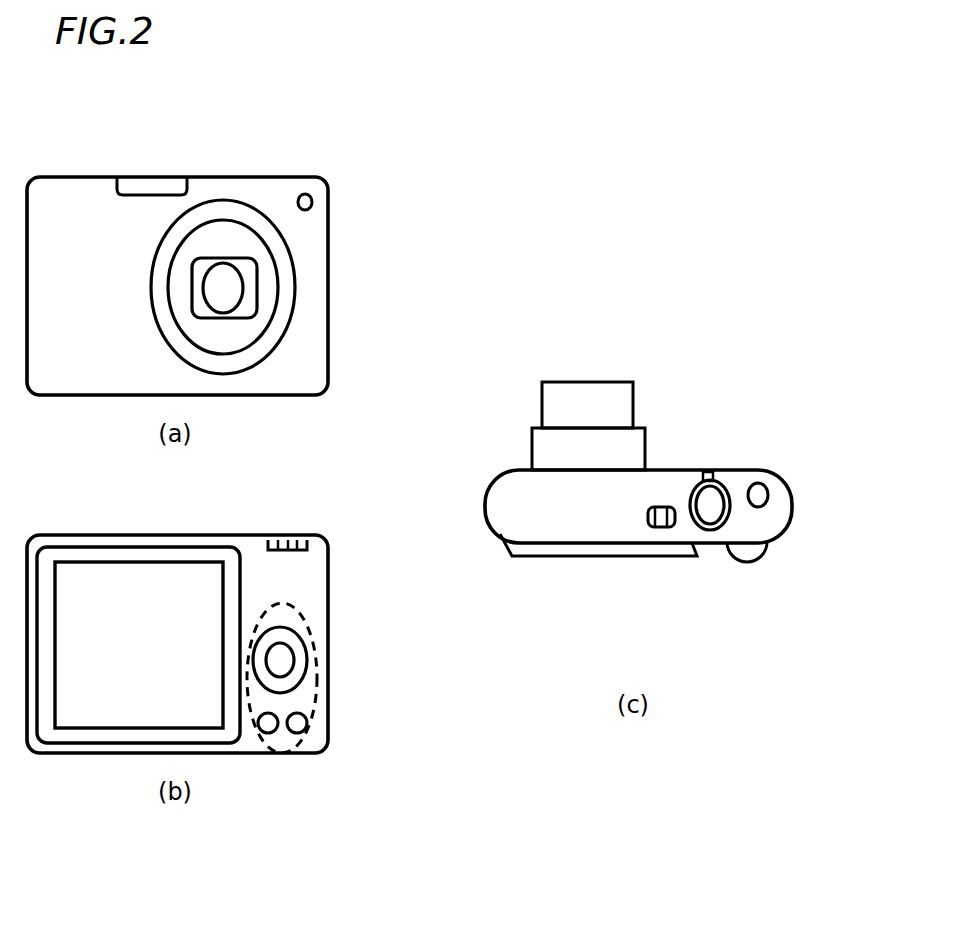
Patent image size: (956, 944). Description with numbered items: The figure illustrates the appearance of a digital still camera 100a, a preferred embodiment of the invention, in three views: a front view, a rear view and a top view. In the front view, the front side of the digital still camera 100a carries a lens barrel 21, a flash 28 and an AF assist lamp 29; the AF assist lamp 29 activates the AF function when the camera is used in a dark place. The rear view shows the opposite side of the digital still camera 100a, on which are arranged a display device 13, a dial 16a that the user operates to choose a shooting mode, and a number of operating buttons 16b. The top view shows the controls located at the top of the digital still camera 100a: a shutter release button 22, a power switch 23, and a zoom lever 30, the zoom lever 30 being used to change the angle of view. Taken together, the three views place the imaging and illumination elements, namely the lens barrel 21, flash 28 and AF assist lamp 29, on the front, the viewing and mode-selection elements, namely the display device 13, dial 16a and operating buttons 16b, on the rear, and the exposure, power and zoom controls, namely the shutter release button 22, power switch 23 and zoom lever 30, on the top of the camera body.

The digital still camera 100a is at (336, 281).
The flash 28 is at (157, 177).
The lens barrel 21 is at (235, 265).
The AF assist lamp 29 is at (310, 196).
The display device 13 is at (137, 563).
The dial 16a is at (287, 537).
The operating buttons 16b is at (317, 662).
The zoom lever 30 is at (708, 475).
The shutter release button 22 is at (708, 527).
The power switch 23 is at (645, 518).